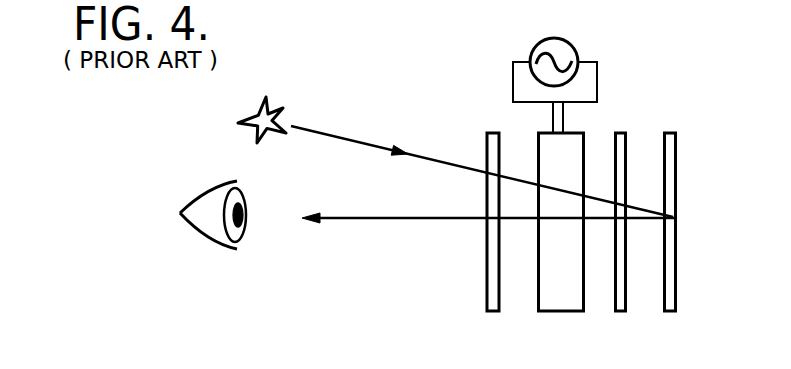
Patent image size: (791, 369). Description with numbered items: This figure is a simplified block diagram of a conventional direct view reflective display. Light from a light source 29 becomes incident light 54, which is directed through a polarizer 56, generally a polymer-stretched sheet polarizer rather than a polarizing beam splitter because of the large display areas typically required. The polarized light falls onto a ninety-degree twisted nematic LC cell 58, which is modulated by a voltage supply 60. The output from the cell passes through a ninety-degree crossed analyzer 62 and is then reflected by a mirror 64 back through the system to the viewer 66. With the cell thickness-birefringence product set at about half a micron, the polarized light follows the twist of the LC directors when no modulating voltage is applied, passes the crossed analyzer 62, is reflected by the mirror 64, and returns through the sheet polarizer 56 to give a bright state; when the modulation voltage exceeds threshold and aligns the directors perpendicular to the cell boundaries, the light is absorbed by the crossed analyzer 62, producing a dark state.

The light source 29 is at (283, 108).
The incident light 54 is at (348, 137).
The polarizer 56 is at (485, 152).
The 90° twisted nematic LC cell 58 is at (575, 312).
The voltage supply 60 is at (541, 37).
The 90° crossed analyzer 62 is at (621, 132).
The mirror 64 is at (693, 120).
The viewer 66 is at (237, 245).